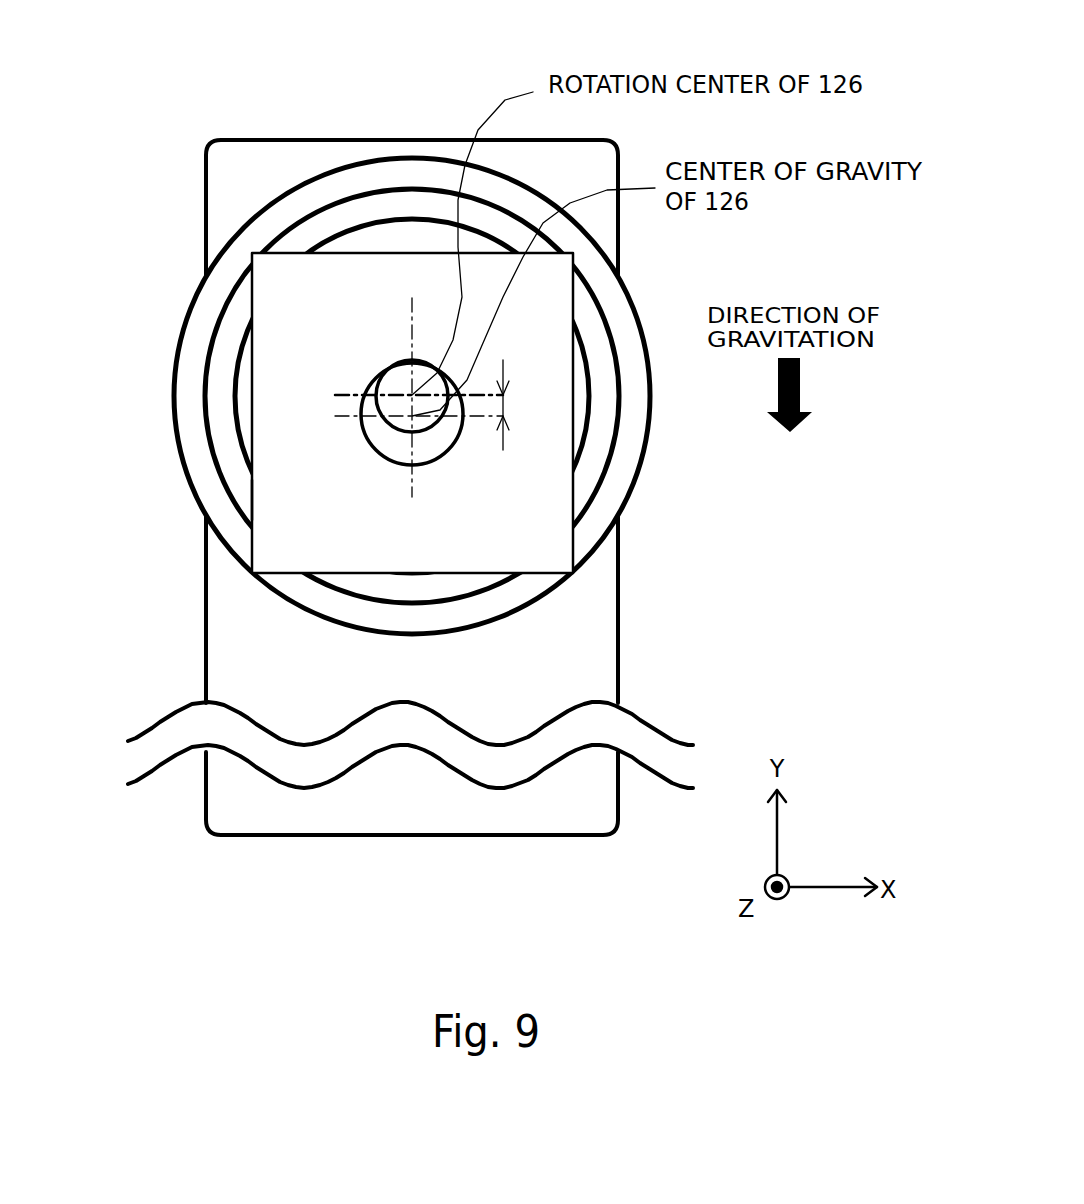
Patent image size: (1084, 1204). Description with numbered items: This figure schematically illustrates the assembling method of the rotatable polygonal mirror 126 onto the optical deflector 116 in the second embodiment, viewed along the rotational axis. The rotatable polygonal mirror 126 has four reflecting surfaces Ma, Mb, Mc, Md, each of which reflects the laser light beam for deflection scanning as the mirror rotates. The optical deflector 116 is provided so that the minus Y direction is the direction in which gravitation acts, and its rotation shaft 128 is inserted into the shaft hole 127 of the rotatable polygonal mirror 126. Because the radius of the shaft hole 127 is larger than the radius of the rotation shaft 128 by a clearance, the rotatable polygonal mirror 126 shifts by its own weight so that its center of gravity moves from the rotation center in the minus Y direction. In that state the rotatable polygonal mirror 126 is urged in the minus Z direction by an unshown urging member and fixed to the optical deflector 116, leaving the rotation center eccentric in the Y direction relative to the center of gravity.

The optical deflector 116 is at (445, 487).
The rotatable polygonal mirror 126 is at (403, 433).
The shaft hole 127 is at (557, 450).
The rotation shaft 128 is at (275, 339).
The reflecting surface Ma is at (390, 426).
The reflecting surface Mb is at (494, 396).
The reflecting surface Mc is at (412, 313).
The reflecting surface Md is at (157, 499).